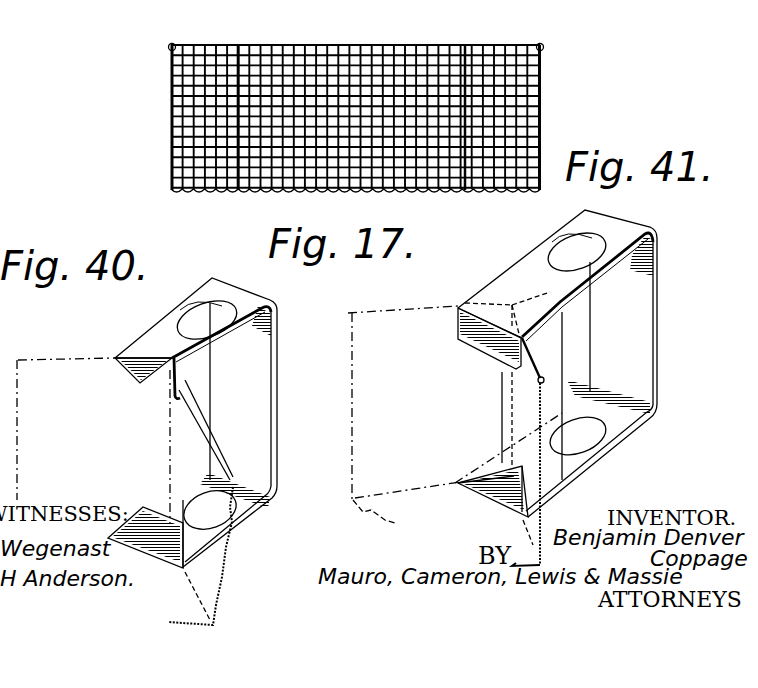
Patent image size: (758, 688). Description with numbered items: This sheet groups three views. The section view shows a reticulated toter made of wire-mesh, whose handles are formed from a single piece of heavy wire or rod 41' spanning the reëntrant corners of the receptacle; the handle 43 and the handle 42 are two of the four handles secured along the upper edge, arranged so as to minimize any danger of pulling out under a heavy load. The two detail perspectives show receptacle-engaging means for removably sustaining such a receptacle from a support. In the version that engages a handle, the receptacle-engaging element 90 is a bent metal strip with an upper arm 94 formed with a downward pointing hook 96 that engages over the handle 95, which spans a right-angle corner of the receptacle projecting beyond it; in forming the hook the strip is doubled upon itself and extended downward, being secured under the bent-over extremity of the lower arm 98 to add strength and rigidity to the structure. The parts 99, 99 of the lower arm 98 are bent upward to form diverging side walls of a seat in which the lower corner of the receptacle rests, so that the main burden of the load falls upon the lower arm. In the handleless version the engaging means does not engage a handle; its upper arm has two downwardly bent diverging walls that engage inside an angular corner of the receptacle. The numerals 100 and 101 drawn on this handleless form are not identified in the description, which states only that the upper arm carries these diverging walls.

In FIG. 17, the heavy wire or rod 41' is at (180, 102).
In FIG. 17, the handle 43 is at (235, 46).
In FIG. 17, the handle 42 is at (490, 48).
In FIG. 41, the handle 42 is at (585, 249).
In FIG. 41, the receptacle-engaging element 90 is at (645, 337).
In FIG. 41, the upper arm 94 is at (504, 285).
In FIG. 41, the handle 95 is at (456, 322).
In FIG. 41, the downward pointing hook 96 is at (507, 360).
In FIG. 41, the lower arm 98 is at (590, 464).
In FIG. 41, the parts of lower arm 99 is at (487, 468).
In FIG. 40, the bracket top plate 100 is at (214, 352).
In FIG. 40, the triangular flap 101 is at (142, 382).